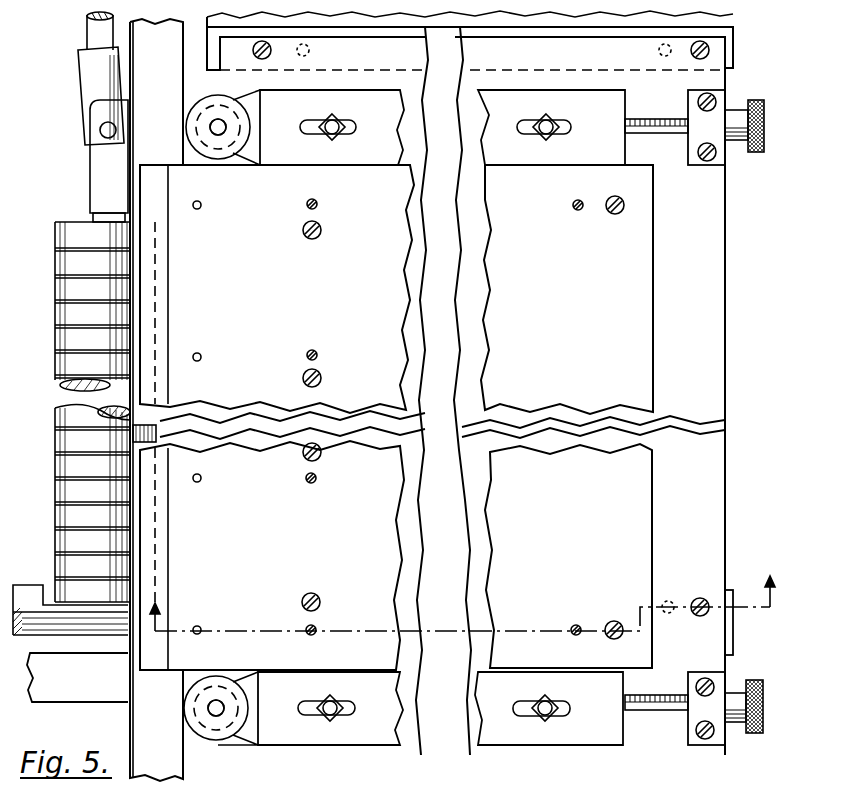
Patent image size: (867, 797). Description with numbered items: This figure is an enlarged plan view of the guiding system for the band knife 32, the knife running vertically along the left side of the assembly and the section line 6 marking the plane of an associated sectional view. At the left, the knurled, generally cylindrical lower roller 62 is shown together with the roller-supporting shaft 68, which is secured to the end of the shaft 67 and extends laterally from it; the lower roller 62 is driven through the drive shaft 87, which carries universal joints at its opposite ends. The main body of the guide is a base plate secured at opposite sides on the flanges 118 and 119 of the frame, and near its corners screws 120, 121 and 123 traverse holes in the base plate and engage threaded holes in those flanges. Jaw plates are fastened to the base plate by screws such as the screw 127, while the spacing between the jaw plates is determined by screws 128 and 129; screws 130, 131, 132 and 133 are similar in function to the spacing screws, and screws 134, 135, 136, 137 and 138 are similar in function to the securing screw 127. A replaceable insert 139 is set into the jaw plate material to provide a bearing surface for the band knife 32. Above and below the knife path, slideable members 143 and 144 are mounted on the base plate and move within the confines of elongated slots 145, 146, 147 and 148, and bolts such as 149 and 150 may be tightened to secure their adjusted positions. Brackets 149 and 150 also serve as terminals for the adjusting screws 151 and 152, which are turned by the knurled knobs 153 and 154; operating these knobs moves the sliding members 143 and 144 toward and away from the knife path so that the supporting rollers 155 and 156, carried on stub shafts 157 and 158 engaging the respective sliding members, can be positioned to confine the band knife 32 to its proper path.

The section line 6- 6 is at (460, 619).
The band knife 32 is at (152, 728).
The lower roller 62 is at (60, 440).
The shaft 67 is at (28, 588).
The roller-supporting shaft 68 is at (100, 632).
The drive shaft 87 is at (85, 29).
The frame flange 118 is at (734, 62).
The frame flange 119 is at (734, 637).
The screw 120 is at (699, 598).
The screw 121 is at (708, 46).
The screw 123 is at (268, 58).
The screw 127 is at (613, 621).
The screw 128 is at (576, 625).
The screw 129 is at (318, 627).
The screw 130 is at (316, 483).
The screw 131 is at (318, 353).
The screw 132 is at (318, 204).
The screw 133 is at (578, 211).
The screw 134 is at (318, 595).
The screw 135 is at (321, 452).
The screw 136 is at (321, 380).
The screw 137 is at (319, 237).
The screw 138 is at (615, 214).
The replaceable insert 139 is at (265, 787).
The slideable member 143 is at (495, 745).
The slideable member 144 is at (512, 160).
The elongated slot 145 is at (343, 123).
The elongated slot 146 is at (533, 124).
The elongated slot 147 is at (306, 716).
The elongated slot 148 is at (556, 716).
The bolt / bracket 149 is at (340, 133).
The bolt / bracket 150 is at (556, 132).
The adjusting screw 151 is at (334, 699).
The adjusting screw 152 is at (656, 128).
The knob 153 is at (760, 732).
The knob 154 is at (760, 132).
The supporting roller 155 is at (222, 673).
The supporting roller 156 is at (228, 152).
The stub shaft 157 is at (221, 708).
The stub shaft 158 is at (222, 127).